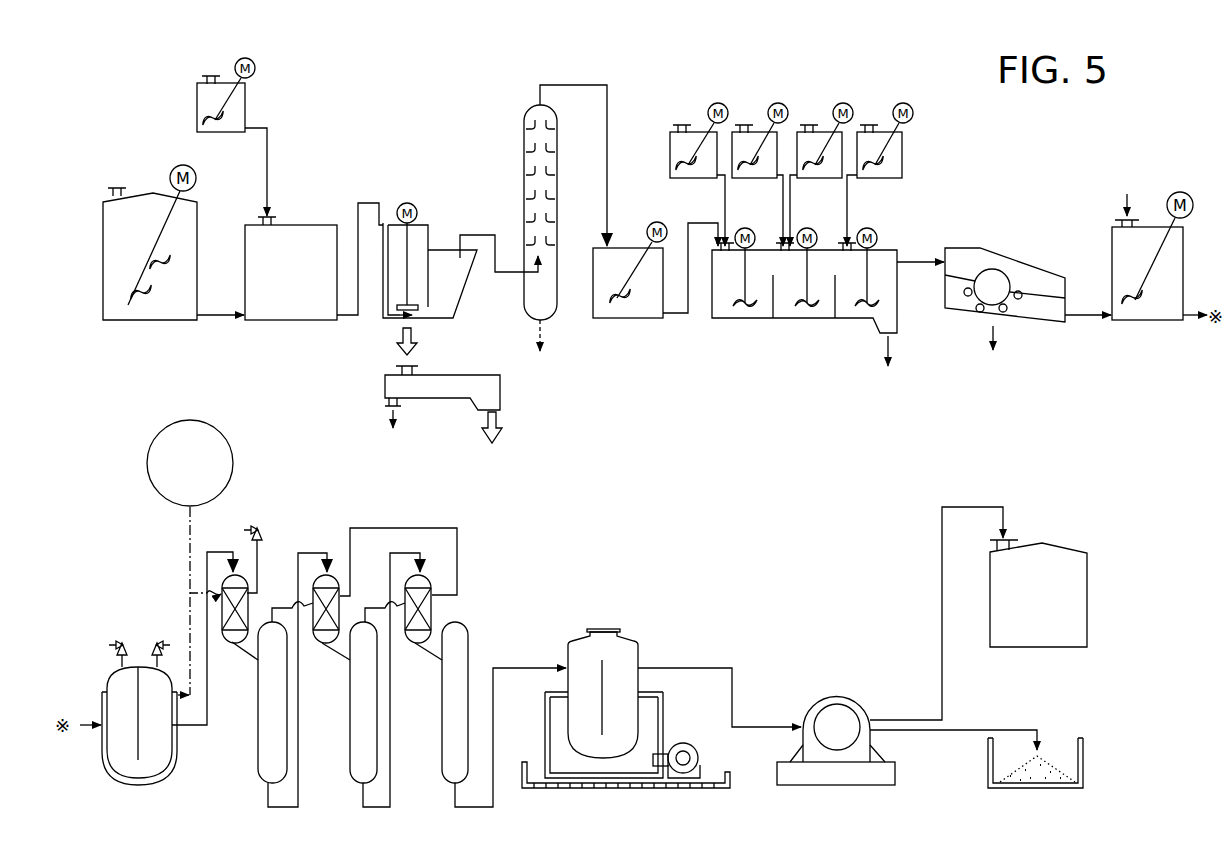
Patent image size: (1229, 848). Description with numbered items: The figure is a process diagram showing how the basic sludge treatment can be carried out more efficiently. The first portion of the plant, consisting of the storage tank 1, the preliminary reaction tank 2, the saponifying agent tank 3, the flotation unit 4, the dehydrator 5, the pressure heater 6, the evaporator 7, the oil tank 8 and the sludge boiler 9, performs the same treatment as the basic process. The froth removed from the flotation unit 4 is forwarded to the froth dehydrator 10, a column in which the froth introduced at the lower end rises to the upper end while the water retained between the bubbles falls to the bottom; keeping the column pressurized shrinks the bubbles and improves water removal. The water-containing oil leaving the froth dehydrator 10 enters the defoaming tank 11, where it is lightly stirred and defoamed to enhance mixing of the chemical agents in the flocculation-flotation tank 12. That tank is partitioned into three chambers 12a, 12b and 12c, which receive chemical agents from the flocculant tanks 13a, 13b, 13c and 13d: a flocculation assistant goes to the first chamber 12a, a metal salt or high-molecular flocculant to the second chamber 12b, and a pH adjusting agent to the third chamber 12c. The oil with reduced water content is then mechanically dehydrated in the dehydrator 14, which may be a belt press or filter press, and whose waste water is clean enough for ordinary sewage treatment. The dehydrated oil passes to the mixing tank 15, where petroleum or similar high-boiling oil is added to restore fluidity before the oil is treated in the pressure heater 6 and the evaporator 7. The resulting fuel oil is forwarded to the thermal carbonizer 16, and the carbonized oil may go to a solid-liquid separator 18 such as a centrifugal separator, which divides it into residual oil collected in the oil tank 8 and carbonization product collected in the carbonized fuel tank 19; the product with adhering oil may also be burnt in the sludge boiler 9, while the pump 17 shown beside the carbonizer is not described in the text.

The storage tank 1 is at (197, 210).
The preliminary reaction tank 2 is at (311, 225).
The saponifying agent tank 3 is at (245, 100).
The flotation unit 4 is at (424, 225).
The dehydrator 5 is at (473, 375).
The pressure heater 6 is at (108, 668).
The evaporator 7 is at (258, 752).
The oil tank 8 is at (1087, 590).
The sludge boiler 9 is at (233, 460).
The froth dehydrator 10 is at (524, 138).
The defoaming tank 11 is at (627, 322).
The flocculation-flotation tank 12 is at (810, 284).
The first chamber 12a is at (729, 314).
The second chamber 12b is at (790, 314).
The third chamber 12c is at (845, 314).
The flocculant tank 13a is at (670, 150).
The flocculant tank 13b is at (745, 180).
The flocculant tank 13c is at (812, 180).
The flocculant tank 13d is at (905, 150).
The dehydrator 14 is at (1024, 262).
The mixing tank 15 is at (1112, 247).
The thermal carbonizer 16 is at (633, 642).
The pump 17 is at (699, 753).
The solid-liquid separator 18 is at (840, 694).
The carbonized fuel tank 19 is at (1083, 752).